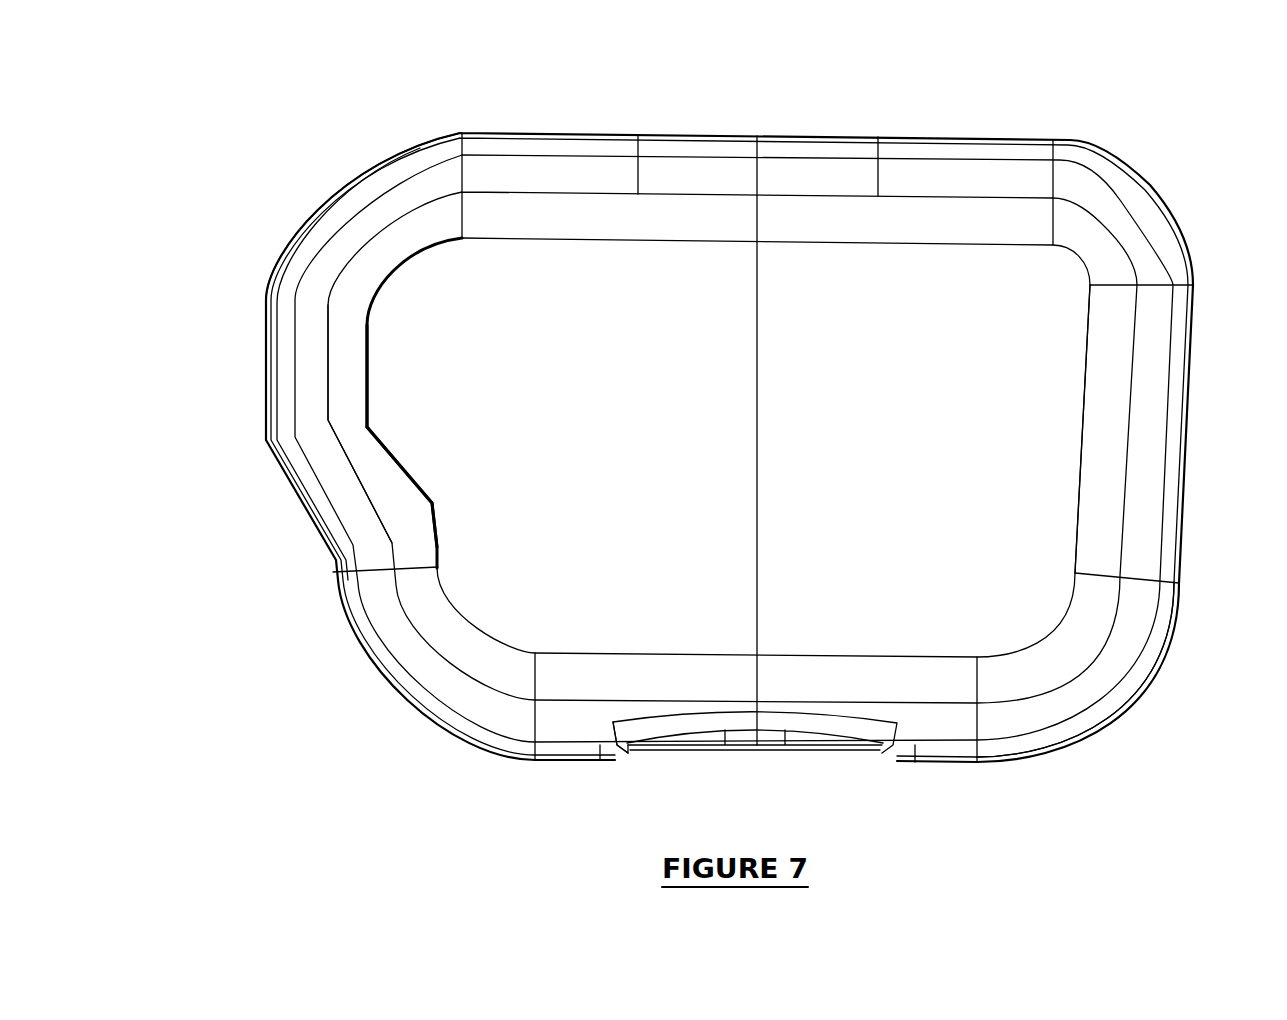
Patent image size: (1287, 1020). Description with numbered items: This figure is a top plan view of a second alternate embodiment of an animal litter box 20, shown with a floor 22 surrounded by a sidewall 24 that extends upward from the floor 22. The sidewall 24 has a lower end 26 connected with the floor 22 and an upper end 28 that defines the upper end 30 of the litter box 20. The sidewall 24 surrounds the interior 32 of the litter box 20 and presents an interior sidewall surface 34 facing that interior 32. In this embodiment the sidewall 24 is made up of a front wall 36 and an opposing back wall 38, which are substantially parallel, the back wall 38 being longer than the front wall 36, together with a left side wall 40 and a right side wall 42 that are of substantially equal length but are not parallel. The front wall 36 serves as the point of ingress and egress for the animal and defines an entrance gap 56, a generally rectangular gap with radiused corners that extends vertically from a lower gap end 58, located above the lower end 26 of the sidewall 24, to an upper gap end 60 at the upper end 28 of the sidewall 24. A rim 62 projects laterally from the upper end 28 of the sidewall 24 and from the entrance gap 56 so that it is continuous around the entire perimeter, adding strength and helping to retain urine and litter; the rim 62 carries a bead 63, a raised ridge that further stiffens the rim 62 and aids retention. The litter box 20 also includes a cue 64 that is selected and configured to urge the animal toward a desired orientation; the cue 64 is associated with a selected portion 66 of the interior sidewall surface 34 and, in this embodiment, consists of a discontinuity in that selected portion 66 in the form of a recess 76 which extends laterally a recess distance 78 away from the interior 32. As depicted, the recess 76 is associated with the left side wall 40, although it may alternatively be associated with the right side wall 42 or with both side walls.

The litter box 20 is at (1093, 750).
The floor 22 is at (1045, 423).
The sidewall 24 is at (1153, 510).
The lower end 26 is at (1078, 548).
The upper end 28 is at (1170, 558).
The upper end of the litter box 30 is at (1197, 348).
The interior 32 is at (993, 283).
The interior sidewall surface 34 is at (913, 218).
The front wall 36 is at (947, 727).
The back wall 38 is at (550, 167).
The left side wall 40 is at (375, 553).
The right side wall 42 is at (1158, 305).
The entrance gap 56 is at (752, 797).
The lower gap end 58 is at (768, 750).
The upper gap end 60 is at (627, 760).
The rim 62 is at (1143, 642).
The bead 63 is at (1128, 682).
The cue 64 is at (303, 388).
The selected portion 66 is at (302, 325).
The recess 76 is at (338, 363).
The recess distance 78 is at (350, 395).